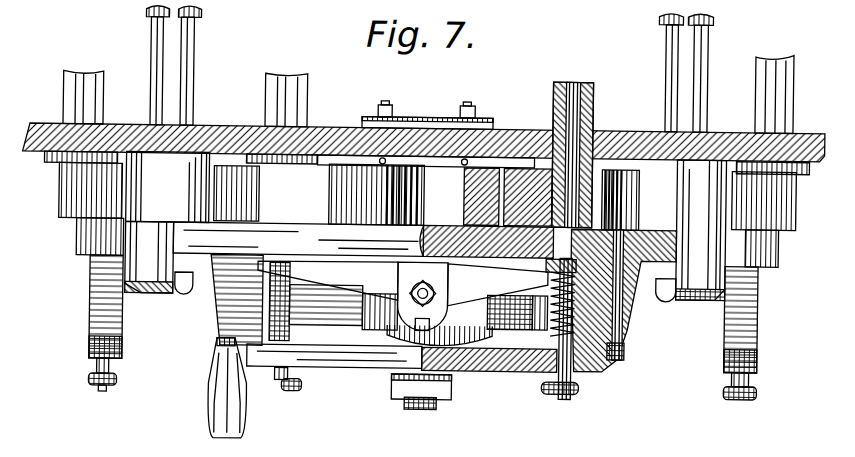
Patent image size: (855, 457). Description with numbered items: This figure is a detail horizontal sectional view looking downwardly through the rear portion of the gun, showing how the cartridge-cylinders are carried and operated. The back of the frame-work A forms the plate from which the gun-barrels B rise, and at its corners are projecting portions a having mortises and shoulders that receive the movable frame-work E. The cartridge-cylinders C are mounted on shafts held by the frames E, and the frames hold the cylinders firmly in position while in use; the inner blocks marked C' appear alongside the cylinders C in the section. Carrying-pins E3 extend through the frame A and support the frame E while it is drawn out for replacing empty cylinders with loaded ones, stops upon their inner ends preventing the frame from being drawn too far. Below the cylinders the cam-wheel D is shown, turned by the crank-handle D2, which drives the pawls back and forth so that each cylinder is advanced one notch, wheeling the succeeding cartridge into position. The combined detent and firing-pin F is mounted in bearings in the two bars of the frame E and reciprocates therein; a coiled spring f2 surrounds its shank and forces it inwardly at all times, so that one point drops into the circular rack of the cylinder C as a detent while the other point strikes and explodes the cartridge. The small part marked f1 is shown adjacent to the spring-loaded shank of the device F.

The back of the frame-work A is at (46, 128).
The gun-barrels B is at (80, 96).
The cartridge-cylinders C is at (420, 201).
The inner clamping blocks C' is at (319, 194).
The cam-wheel D is at (402, 292).
The crank-handle D2 is at (224, 420).
The movable frame-work E is at (100, 283).
The carrying-pins E3 is at (730, 29).
The combined detent and firing-pin F is at (105, 397).
The projecting portions a is at (425, 247).
The nut f1 is at (571, 253).
The coiled spring f2 is at (290, 326).